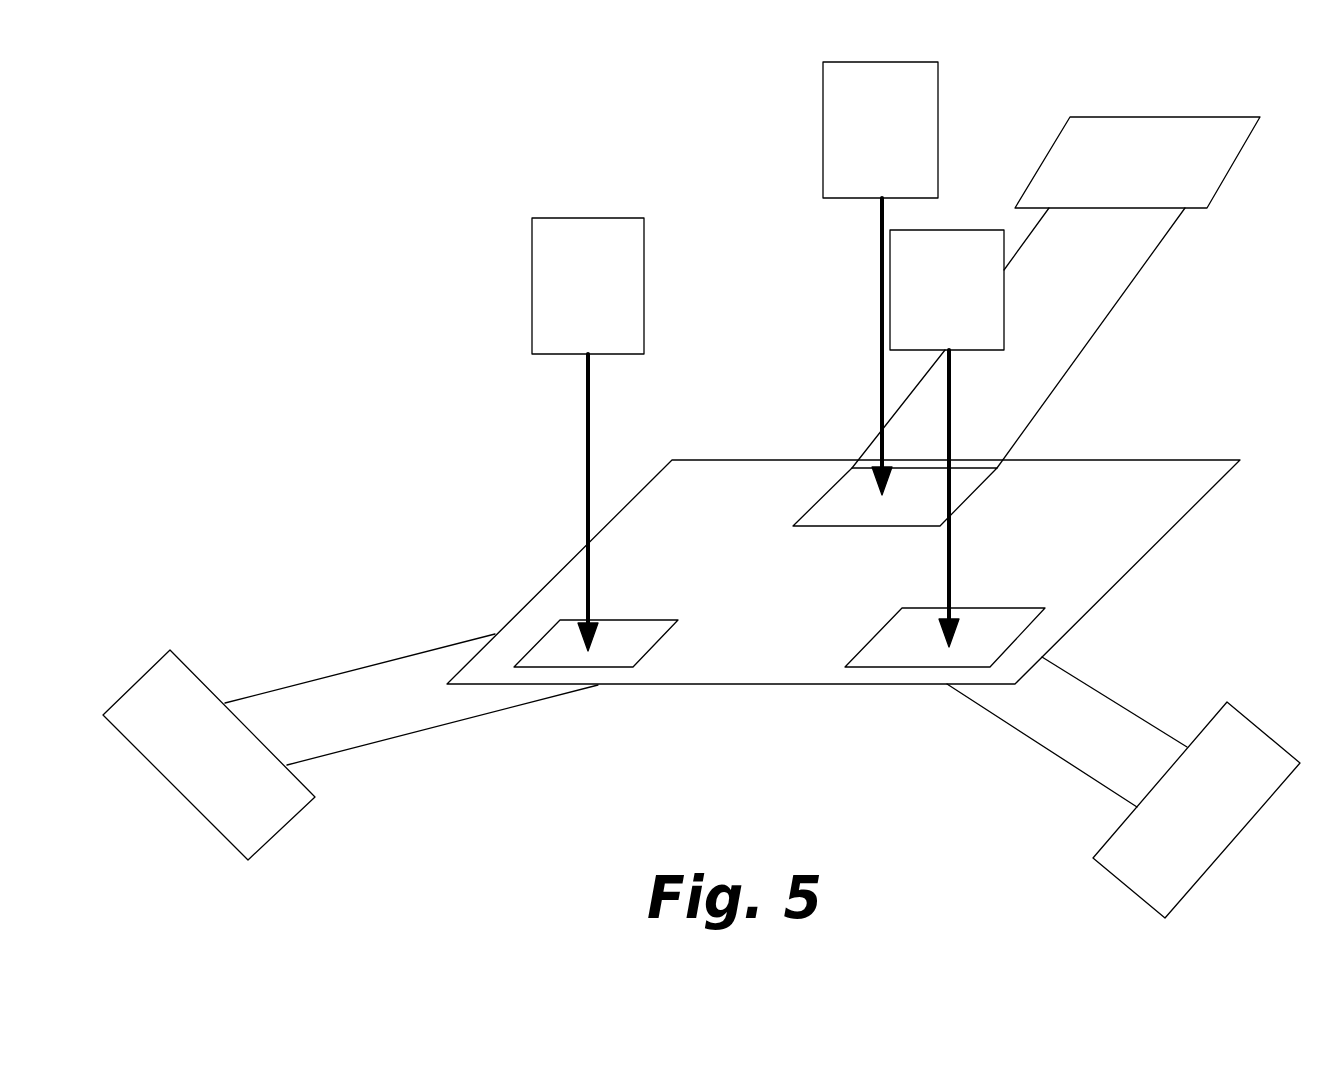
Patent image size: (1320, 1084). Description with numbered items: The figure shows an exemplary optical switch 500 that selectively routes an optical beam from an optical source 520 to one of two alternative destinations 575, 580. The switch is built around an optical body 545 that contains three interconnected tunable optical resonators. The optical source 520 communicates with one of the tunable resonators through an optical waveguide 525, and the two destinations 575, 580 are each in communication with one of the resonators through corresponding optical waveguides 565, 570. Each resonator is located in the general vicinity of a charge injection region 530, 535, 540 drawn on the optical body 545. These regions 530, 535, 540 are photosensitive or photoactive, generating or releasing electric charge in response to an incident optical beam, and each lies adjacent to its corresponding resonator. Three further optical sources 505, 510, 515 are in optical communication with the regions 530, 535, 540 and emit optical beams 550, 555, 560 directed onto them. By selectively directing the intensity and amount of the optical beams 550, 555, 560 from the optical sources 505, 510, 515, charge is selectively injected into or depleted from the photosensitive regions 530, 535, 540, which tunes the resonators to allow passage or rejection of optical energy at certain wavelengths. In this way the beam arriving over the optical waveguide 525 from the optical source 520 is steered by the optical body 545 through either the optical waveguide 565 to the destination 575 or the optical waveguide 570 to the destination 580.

The optical switch 500 is at (288, 198).
The optical source 505 is at (886, 195).
The optical source 510 is at (597, 349).
The optical source 515 is at (958, 346).
The optical source 520 is at (1194, 201).
The optical waveguide 525 is at (1078, 275).
The charge injection region 530 is at (838, 507).
The charge injection region 535 is at (626, 649).
The charge injection region 540 is at (857, 650).
The optical body 545 is at (1100, 500).
The optical beam 550 is at (586, 440).
The optical beam 555 is at (879, 382).
The optical beam 560 is at (952, 541).
The optical waveguide 565 is at (408, 717).
The optical waveguide 570 is at (1048, 717).
The destination 575 is at (257, 822).
The destination 580 is at (1143, 880).